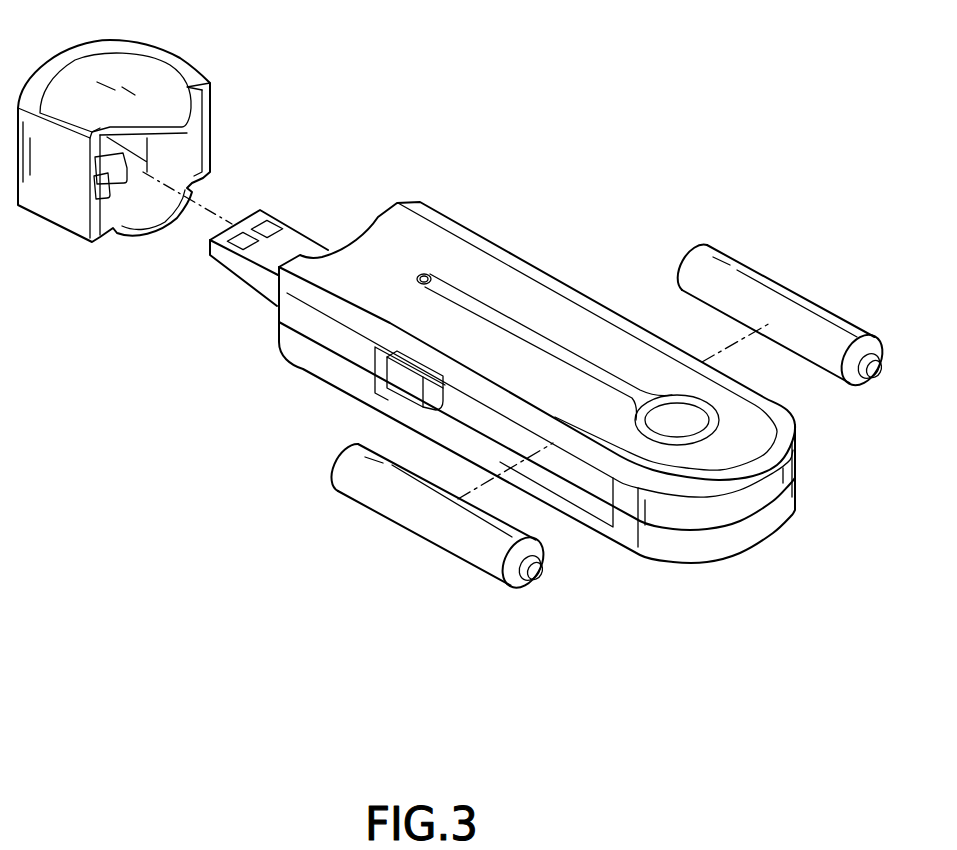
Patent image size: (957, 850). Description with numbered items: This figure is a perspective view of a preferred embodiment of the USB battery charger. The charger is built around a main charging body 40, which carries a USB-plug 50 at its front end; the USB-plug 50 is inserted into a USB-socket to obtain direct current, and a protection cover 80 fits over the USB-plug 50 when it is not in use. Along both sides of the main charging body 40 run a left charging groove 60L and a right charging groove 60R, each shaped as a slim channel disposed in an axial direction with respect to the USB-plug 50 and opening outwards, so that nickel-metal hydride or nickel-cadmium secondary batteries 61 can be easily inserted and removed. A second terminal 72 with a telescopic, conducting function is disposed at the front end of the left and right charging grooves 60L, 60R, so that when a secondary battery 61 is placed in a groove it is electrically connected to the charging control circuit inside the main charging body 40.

The main charging body 40 is at (475, 207).
The USB-plug 50 is at (290, 242).
The left charging groove 60L is at (603, 492).
The right charging groove 60R is at (590, 288).
The secondary battery 61 is at (805, 320).
The second terminal 72 is at (405, 387).
The protection cover 80 is at (147, 76).